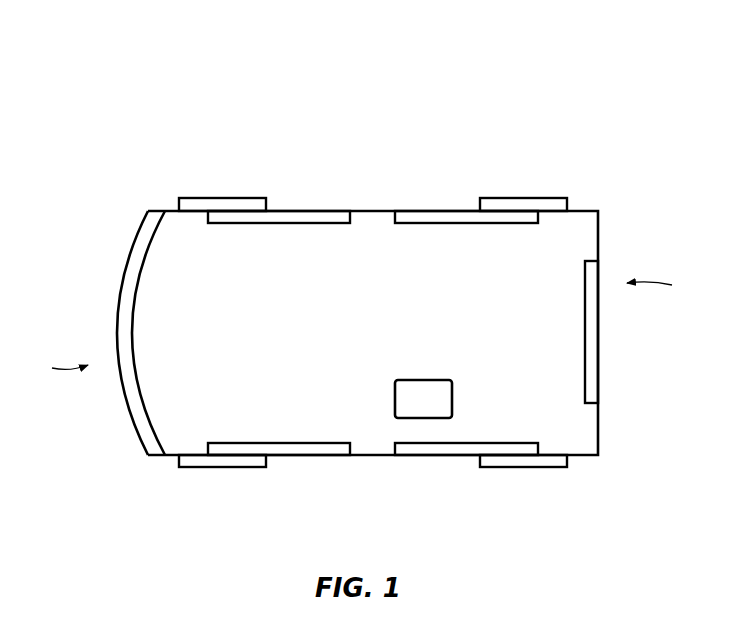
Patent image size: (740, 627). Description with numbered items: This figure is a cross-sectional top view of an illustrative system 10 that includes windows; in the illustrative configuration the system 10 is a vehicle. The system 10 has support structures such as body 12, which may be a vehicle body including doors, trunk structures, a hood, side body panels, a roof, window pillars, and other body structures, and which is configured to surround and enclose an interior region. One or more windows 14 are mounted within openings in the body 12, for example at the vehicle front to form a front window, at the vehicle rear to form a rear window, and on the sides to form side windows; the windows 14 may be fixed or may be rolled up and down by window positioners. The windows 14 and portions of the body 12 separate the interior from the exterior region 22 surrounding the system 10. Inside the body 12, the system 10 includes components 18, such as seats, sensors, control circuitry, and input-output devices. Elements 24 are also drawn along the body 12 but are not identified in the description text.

The system 10 is at (512, 80).
The body 12 is at (585, 209).
The windows 14 is at (322, 211).
The components 18 is at (452, 398).
The exterior region 22 is at (190, 128).
The sensor modules 24 is at (222, 198).